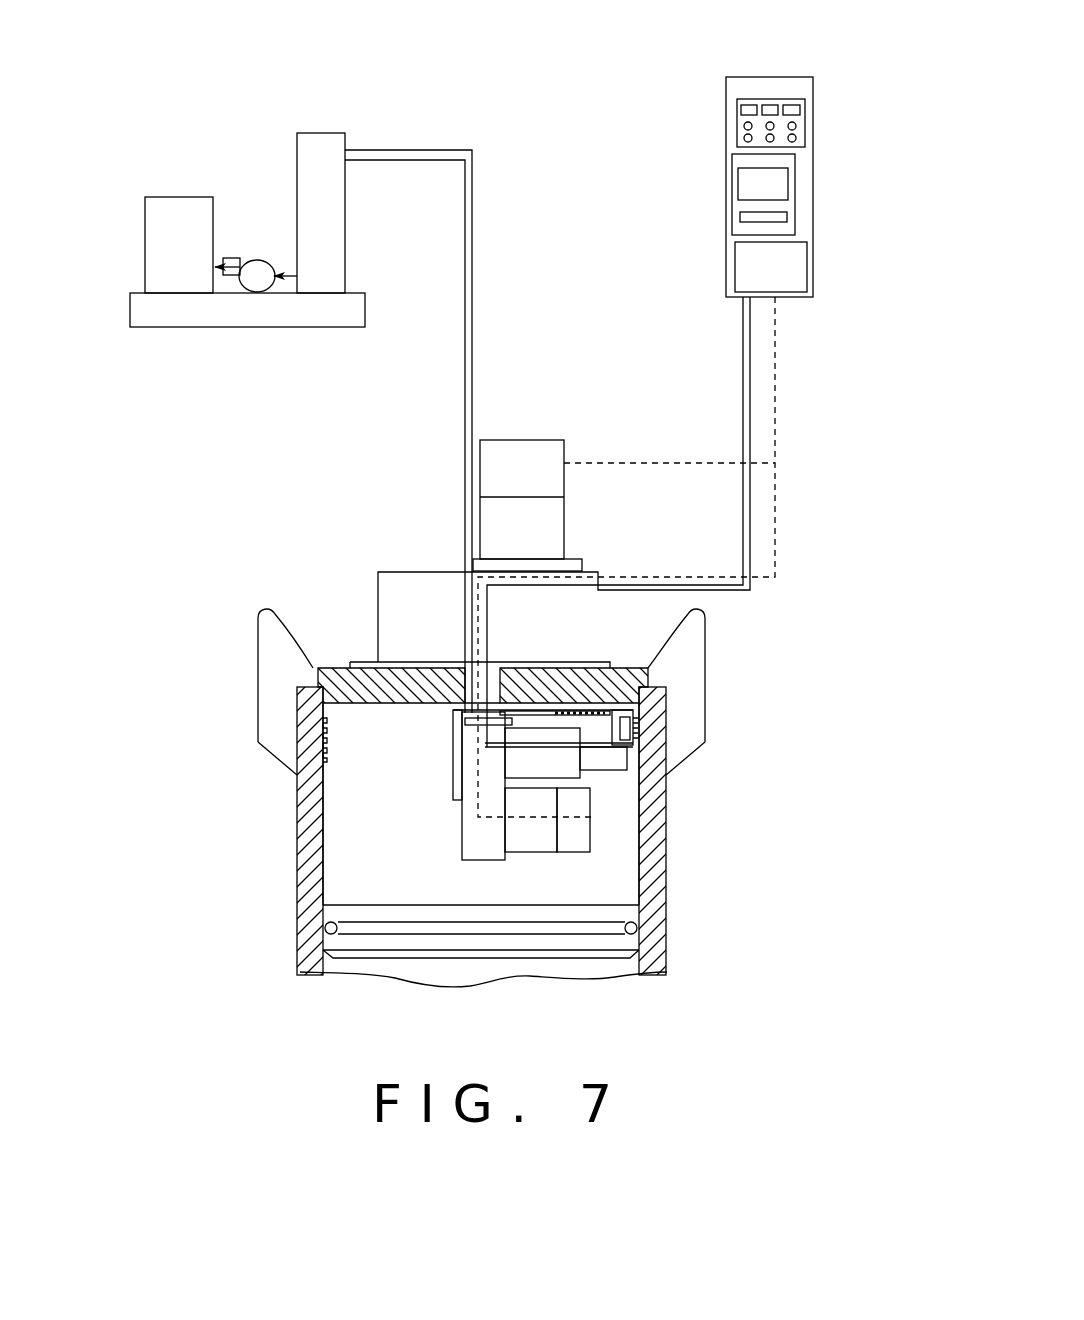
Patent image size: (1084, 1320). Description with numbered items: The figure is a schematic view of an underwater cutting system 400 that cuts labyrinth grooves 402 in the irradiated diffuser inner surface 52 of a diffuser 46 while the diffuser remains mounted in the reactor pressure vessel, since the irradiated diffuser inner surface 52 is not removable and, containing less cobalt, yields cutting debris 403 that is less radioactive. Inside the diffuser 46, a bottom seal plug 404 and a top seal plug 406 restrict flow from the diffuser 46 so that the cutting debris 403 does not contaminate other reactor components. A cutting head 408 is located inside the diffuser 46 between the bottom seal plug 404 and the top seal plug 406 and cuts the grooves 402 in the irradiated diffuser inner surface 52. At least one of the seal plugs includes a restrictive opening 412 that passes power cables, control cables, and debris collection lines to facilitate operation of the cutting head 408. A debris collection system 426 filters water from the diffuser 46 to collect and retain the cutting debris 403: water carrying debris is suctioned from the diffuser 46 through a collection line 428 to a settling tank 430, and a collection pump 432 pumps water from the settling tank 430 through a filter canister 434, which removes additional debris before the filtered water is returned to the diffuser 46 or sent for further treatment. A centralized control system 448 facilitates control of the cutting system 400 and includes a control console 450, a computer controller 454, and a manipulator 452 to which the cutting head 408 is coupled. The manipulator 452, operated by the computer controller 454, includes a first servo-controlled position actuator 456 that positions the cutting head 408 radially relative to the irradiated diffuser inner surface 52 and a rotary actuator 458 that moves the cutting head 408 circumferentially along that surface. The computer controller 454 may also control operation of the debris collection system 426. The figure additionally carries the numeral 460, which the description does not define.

The debris collection system 426 is at (252, 90).
The settling tank 430 is at (318, 130).
The collection pump 432 is at (233, 255).
The filter canister 434 is at (147, 218).
The collection line 428 is at (473, 246).
The centralized control system 448 is at (770, 52).
The control console 450 is at (813, 162).
The computer controller 454 is at (727, 190).
The underwater cutting system 400 is at (845, 290).
The sensor circuit 460 is at (858, 346).
The rotary actuator 458 is at (508, 438).
The top seal plug 406 is at (334, 668).
The restrictive opening 412 is at (512, 663).
The cutting debris 403 is at (588, 709).
The labyrinth grooves 402 is at (345, 739).
The cutting head 408 is at (618, 783).
The diffuser 46 is at (296, 854).
The irradiated diffuser inner surface 52 is at (328, 826).
The bottom seal plug 404 is at (318, 955).
The manipulator 452 is at (463, 868).
The first servo-controlled position actuator 456 is at (593, 858).